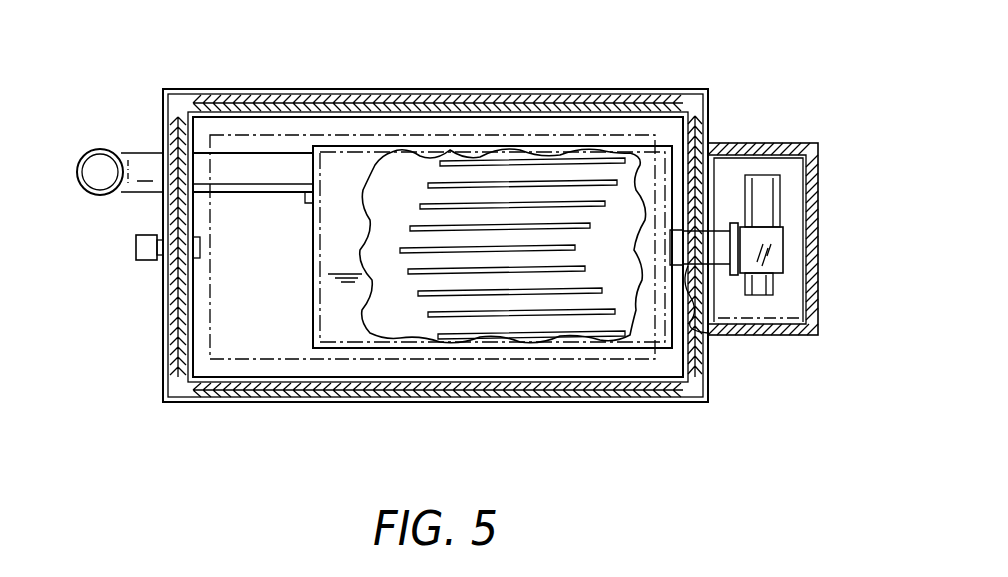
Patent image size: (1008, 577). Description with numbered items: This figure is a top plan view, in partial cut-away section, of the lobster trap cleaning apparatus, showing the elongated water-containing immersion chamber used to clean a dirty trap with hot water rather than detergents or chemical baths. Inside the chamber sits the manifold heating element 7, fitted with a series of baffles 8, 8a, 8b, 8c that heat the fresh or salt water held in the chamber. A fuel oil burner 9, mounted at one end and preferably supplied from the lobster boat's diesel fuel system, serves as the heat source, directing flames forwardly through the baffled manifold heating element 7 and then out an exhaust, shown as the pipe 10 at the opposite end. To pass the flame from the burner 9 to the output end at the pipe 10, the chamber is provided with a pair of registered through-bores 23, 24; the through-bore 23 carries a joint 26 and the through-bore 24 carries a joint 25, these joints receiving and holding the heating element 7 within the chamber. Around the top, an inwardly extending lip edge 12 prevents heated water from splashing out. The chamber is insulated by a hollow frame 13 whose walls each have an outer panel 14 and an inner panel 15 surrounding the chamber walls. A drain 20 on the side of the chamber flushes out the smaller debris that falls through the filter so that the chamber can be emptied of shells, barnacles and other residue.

The manifold heating element 7 is at (352, 175).
The baffle 8 is at (503, 273).
The baffle 8a is at (557, 292).
The baffle 8b is at (593, 316).
The baffle 8c is at (615, 338).
The fuel oil burner 9 is at (770, 257).
The exhaust pipe 10 is at (104, 150).
The lip edge 12 is at (453, 135).
The hollow frame 13 is at (188, 398).
The outer panel 14 is at (222, 400).
The inner panel 15 is at (236, 377).
The drain 20 is at (140, 250).
The through-bore 23 is at (708, 333).
The through-bore 24 is at (252, 168).
The joint 25 is at (305, 203).
The joint 26 is at (735, 223).